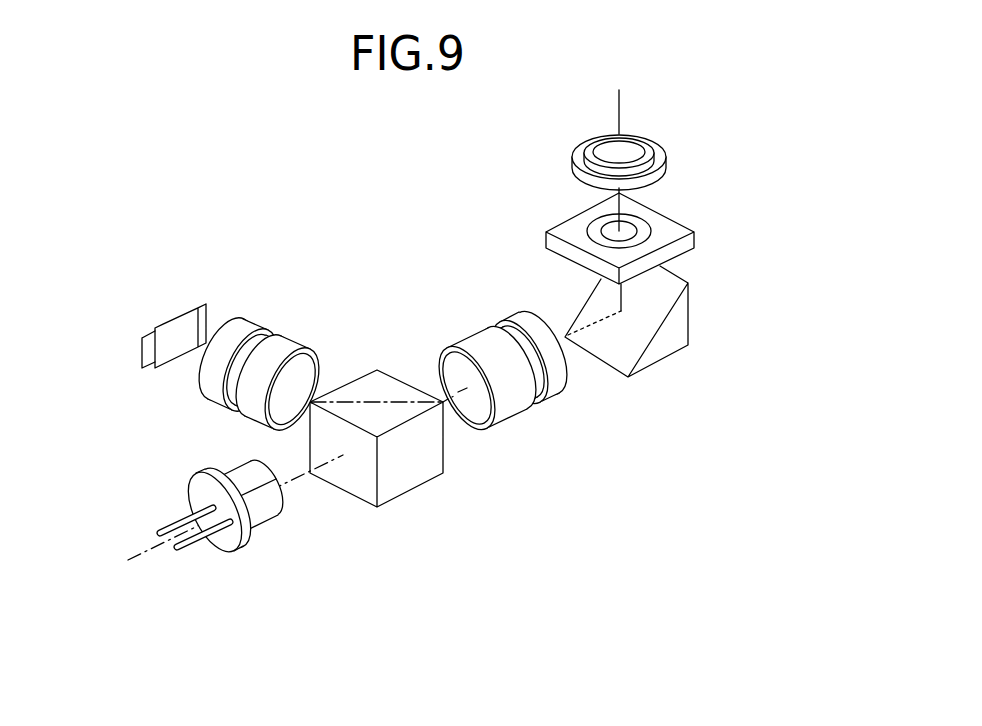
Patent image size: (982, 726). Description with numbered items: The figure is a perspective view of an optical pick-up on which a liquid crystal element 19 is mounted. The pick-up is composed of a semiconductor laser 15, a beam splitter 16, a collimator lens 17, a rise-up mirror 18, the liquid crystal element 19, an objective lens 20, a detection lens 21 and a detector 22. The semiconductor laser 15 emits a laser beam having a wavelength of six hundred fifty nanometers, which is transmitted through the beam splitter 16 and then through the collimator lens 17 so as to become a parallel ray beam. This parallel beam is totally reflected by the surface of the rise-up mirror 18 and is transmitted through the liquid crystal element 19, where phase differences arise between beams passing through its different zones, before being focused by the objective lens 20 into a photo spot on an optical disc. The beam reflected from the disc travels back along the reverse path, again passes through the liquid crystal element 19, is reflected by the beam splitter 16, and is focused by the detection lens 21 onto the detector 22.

The semiconductor laser 15 is at (195, 493).
The beam splitter 16 is at (373, 376).
The collimator lens 17 is at (474, 344).
The rise-up mirror 18 is at (684, 315).
The liquid crystal element 19 is at (677, 223).
The objective lens 20 is at (648, 146).
The detection lens 21 is at (210, 385).
The detector 22 is at (155, 365).